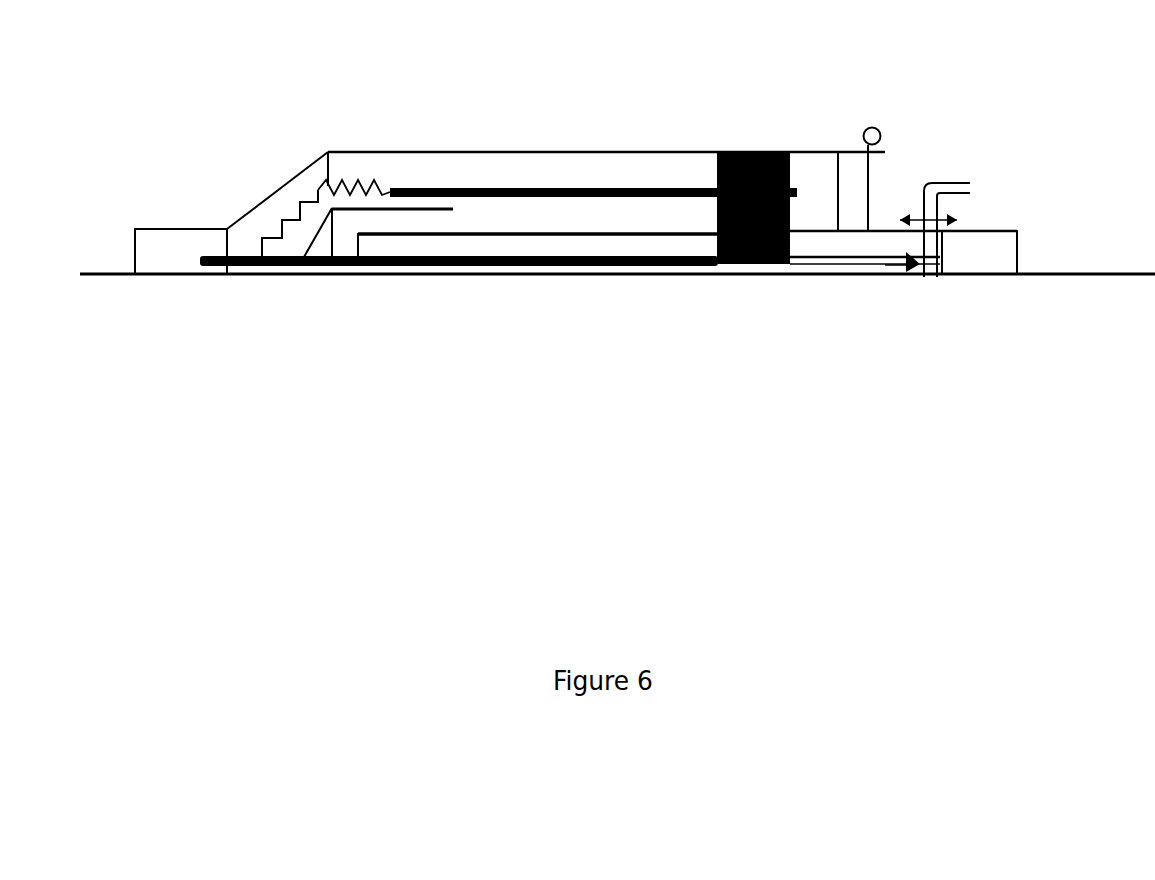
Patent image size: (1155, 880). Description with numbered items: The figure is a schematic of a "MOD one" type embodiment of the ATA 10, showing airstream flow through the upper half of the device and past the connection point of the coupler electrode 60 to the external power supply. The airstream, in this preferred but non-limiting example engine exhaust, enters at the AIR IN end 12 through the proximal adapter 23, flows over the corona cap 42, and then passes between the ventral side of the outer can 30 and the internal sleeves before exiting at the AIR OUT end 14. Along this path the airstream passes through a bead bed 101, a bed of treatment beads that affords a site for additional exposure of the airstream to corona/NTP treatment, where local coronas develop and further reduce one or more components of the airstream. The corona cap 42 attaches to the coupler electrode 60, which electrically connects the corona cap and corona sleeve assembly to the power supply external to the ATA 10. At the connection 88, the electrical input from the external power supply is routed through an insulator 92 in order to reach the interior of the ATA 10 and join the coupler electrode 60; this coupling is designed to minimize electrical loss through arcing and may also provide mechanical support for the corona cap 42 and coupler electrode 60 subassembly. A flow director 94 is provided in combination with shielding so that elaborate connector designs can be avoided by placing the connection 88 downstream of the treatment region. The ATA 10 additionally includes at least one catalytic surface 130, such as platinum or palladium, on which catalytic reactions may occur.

The AIR IN end 12 is at (611, 212).
The proximal adapter 23 is at (185, 228).
The outer can 30 is at (440, 151).
The ATA 10 is at (452, 252).
The corona cap 42 is at (295, 240).
The bead bed 101 is at (758, 152).
The flow director 94 is at (855, 193).
The coupler electrode 60 is at (833, 265).
The AIR OUT end 14 is at (1018, 249).
The insulator 92 is at (957, 217).
The connection 88 is at (905, 270).
The catalytic surface 130 is at (630, 264).